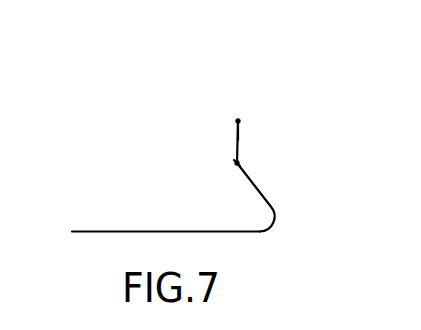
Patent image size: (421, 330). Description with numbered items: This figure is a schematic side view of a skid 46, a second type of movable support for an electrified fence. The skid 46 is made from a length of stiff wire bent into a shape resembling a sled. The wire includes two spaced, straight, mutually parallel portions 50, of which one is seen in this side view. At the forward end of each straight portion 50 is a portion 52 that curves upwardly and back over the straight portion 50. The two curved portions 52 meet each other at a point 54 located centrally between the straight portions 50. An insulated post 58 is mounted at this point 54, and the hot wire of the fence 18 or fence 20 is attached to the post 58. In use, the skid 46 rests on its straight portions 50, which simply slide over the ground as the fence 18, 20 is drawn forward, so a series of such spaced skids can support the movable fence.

The fence 18 is at (238, 121).
The fence 20 is at (250, 121).
The skid 46 is at (103, 150).
The straight portion 50 is at (170, 231).
The curved portion 52 is at (275, 210).
The point 54 is at (235, 166).
The insulated post 58 is at (238, 148).